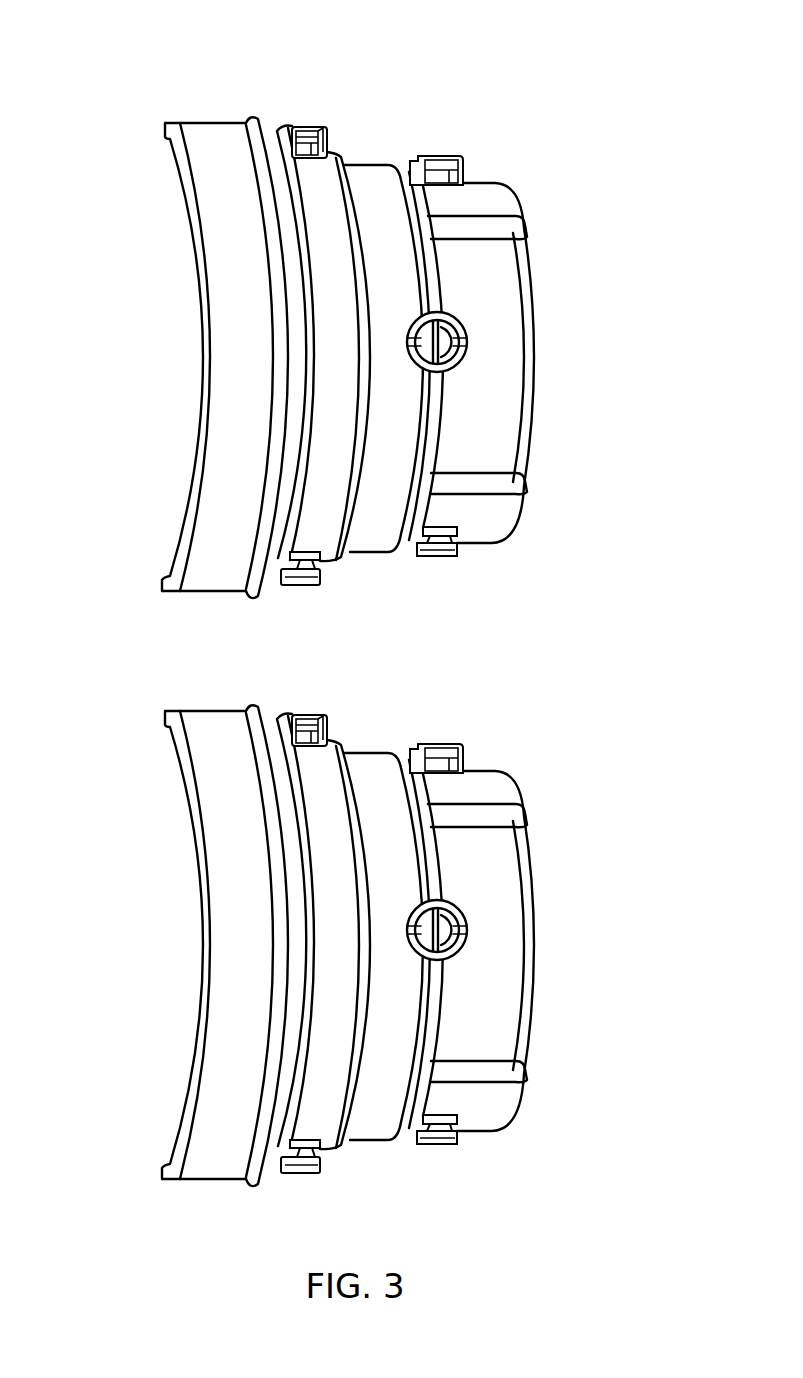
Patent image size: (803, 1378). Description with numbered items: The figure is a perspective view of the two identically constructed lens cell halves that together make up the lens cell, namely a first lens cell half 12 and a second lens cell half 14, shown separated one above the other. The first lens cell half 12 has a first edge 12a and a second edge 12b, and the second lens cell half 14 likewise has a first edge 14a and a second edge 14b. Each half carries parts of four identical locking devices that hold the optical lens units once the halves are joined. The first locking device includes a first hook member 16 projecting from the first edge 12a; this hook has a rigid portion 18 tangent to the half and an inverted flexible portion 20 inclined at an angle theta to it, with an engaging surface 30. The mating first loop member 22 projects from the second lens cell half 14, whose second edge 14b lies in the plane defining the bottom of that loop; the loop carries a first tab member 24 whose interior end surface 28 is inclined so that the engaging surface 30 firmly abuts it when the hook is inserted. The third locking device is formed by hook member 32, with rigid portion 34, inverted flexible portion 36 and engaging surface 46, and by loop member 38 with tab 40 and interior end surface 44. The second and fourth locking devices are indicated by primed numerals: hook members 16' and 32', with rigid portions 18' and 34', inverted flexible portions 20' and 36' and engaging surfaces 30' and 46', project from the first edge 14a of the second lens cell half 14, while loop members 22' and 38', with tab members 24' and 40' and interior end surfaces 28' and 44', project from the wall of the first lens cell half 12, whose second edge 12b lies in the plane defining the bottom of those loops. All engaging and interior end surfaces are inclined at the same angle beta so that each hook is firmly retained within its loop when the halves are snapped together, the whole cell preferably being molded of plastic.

The first lens cell half 12 is at (610, 293).
The first edge of first lens cell half 12a is at (193, 593).
The second edge of first lens cell half 12b is at (192, 121).
The second lens cell half 14 is at (600, 925).
The first edge of second lens cell half 14a is at (193, 1181).
The second edge of second lens cell half 14b is at (188, 710).
The first hook member 16 is at (423, 588).
The rigid portion 18 is at (488, 551).
The inverted flexible portion 20 is at (504, 584).
The first loop member 22 is at (419, 721).
The first tab member 24 is at (519, 731).
The interior end surface 28 is at (473, 724).
The engaging surface 30 is at (466, 591).
The hook member 32 is at (275, 603).
The rigid portion 34 is at (210, 519).
The inverted flexible portion 36 is at (345, 579).
The loop member 38 is at (304, 691).
The latch tab of fourth latch block 40 is at (338, 697).
The interior end surface 44 is at (268, 689).
The engaging surface 46 is at (326, 607).
The hook member 16' is at (422, 1182).
The rigid portion 18' is at (491, 1141).
The inverted flexible portion 20' is at (507, 1163).
The loop member 22' is at (421, 107).
The tab member 24' is at (520, 141).
The interior end surface 28' is at (485, 117).
The engaging surface 30' is at (481, 1186).
The hook member 32' is at (276, 1192).
The rigid portion 34' is at (210, 1106).
The inverted flexible portion 36' is at (348, 1167).
The loop member 38' is at (285, 100).
The latch tab of fourth latch block of first section 40' is at (337, 103).
The interior end surface 44' is at (173, 182).
The engaging surface 46' is at (329, 1196).